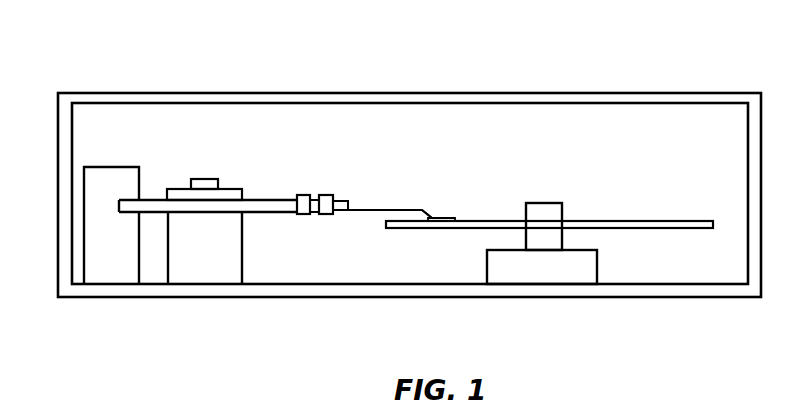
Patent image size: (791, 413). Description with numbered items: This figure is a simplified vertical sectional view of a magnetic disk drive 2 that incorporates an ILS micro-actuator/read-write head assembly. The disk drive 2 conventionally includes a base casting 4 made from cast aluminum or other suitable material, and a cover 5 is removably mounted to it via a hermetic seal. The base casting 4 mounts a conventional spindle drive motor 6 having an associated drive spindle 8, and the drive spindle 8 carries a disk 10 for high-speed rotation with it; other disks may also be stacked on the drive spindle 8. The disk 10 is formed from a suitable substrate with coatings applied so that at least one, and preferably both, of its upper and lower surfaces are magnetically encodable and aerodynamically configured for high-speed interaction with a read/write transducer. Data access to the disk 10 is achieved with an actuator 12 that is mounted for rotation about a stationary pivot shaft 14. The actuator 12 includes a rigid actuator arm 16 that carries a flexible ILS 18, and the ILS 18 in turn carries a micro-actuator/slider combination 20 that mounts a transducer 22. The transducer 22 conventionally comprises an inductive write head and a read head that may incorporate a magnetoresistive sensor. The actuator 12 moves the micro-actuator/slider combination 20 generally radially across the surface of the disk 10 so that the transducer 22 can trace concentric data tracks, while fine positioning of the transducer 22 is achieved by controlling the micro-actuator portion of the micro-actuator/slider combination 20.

The disk drive 2 is at (88, 53).
The base casting 4 is at (365, 297).
The cover 5 is at (363, 93).
The spindle drive motor 6 is at (597, 268).
The drive spindle 8 is at (545, 203).
The disk 10 is at (668, 221).
The actuator 12 is at (243, 262).
The pivot shaft 14 is at (203, 178).
The actuator arm 16 is at (272, 199).
The ILS 18 is at (369, 209).
The micro-actuator/slider combination 20 is at (437, 218).
The transducer 22 is at (455, 219).